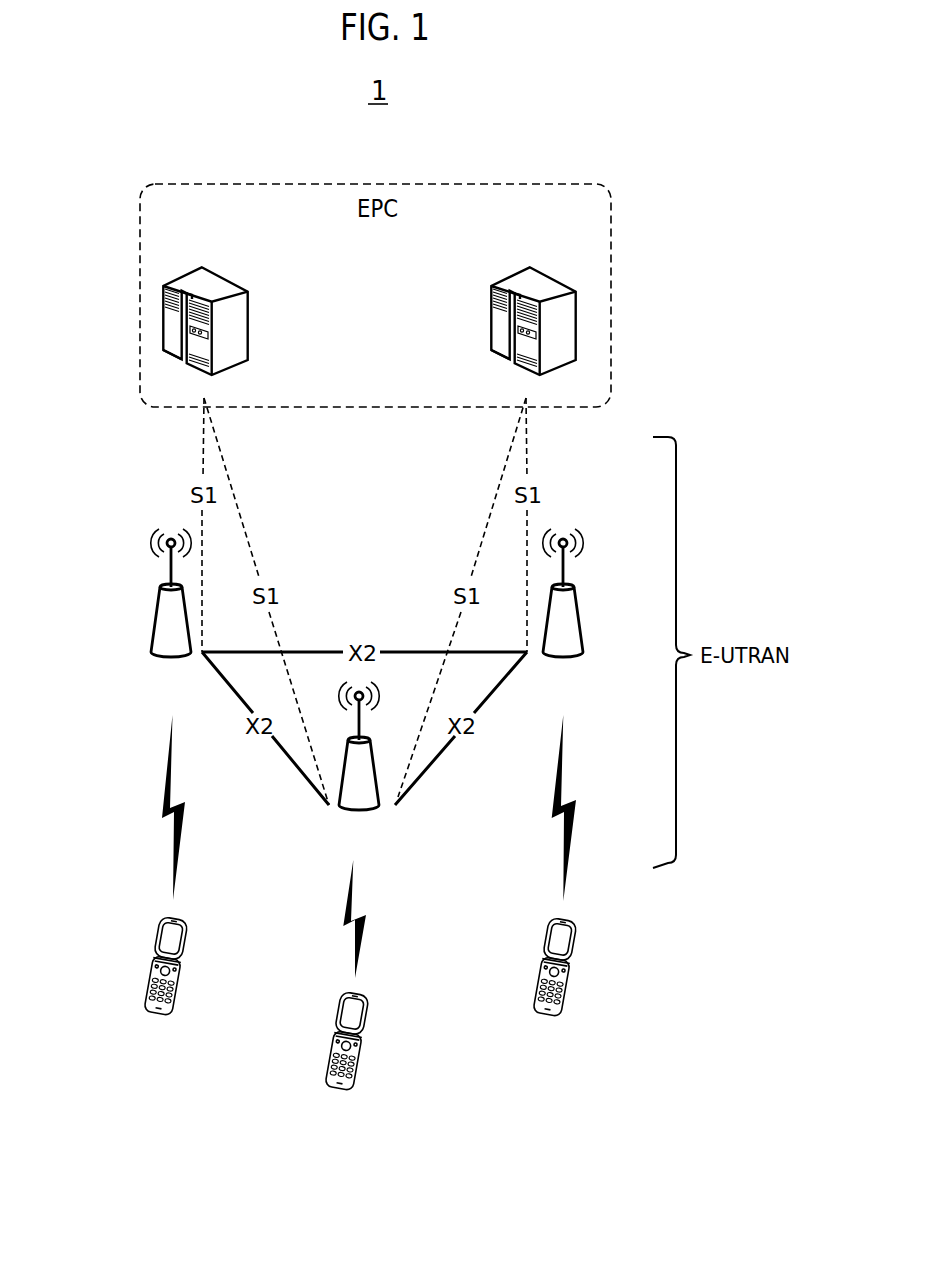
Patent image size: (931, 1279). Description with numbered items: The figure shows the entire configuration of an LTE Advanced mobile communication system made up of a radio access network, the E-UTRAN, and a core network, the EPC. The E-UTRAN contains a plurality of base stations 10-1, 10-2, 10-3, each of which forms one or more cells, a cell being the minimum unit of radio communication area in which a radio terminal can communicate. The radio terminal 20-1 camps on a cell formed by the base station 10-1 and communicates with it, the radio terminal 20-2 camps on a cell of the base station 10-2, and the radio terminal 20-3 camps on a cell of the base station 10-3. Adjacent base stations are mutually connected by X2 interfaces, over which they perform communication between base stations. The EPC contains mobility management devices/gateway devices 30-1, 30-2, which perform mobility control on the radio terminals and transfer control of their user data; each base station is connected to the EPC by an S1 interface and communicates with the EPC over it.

The base station 10-1 is at (367, 812).
The base station 10-2 is at (157, 613).
The base station 10-3 is at (618, 595).
The radio terminal 20-1 is at (338, 1092).
The radio terminal 20-2 is at (157, 1017).
The radio terminal 20-3 is at (545, 1017).
The mobility management device/gateway device 30-1 is at (225, 277).
The mobility management device/gateway device 30-2 is at (507, 277).